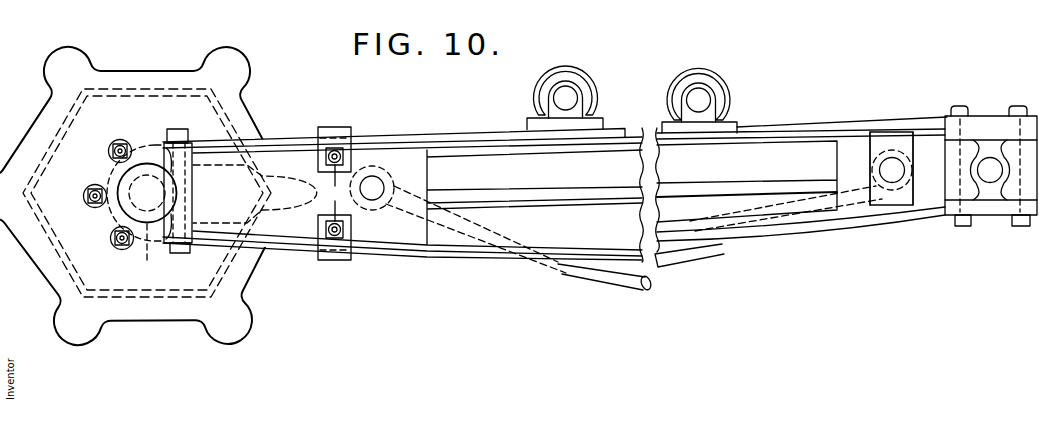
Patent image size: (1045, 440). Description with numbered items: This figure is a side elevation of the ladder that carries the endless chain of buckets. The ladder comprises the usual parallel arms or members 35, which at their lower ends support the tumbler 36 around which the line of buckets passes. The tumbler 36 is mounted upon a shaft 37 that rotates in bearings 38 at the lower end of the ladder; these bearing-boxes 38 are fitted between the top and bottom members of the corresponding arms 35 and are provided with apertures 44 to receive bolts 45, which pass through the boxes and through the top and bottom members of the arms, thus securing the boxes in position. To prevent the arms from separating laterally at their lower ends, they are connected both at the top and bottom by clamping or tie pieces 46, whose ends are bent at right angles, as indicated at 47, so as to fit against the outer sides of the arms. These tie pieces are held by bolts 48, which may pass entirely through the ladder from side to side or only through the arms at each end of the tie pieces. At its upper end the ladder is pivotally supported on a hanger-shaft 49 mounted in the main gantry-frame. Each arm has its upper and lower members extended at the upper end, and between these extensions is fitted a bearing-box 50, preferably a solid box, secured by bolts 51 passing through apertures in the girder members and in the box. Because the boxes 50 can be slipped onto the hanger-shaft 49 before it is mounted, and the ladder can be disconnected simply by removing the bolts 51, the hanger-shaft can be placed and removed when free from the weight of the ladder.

The parallel arms or members 35 is at (556, 240).
The tumbler 36 is at (112, 71).
The shaft 37 is at (147, 252).
The bearings 38 is at (120, 186).
The apertures 44 is at (258, 118).
The bolts 45 is at (175, 128).
The clamping or tie pieces 46 is at (333, 127).
The bent ends 47 is at (352, 152).
The bolts 48 is at (331, 193).
The hanger-shaft 49 is at (347, 228).
The bearing-box 50 is at (1008, 195).
The bolts 51 is at (1016, 105).